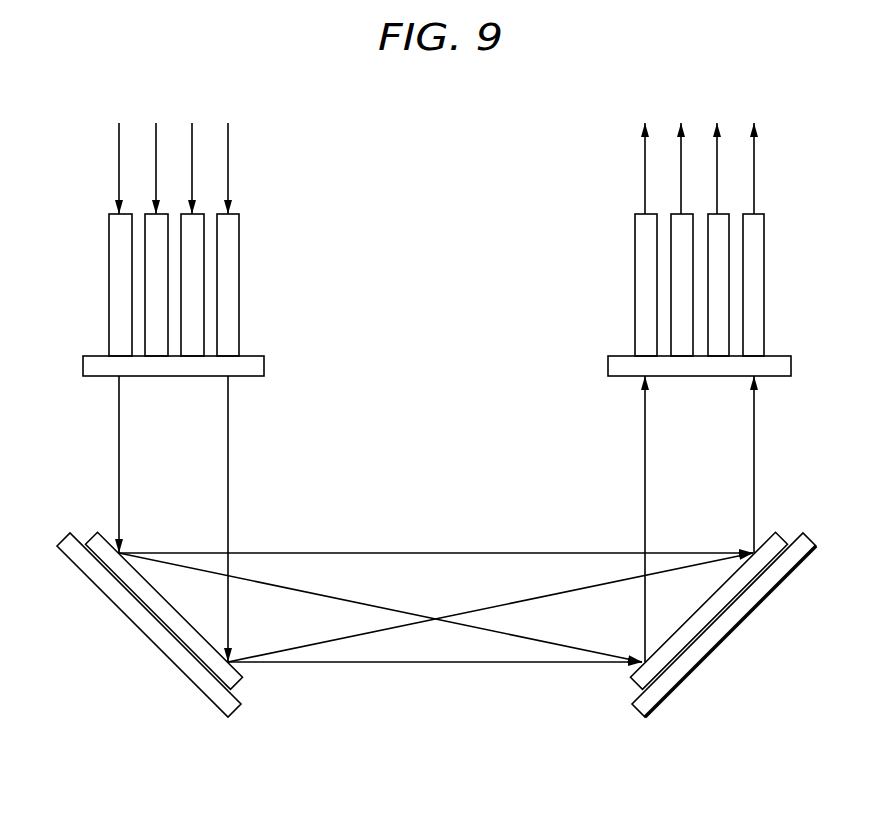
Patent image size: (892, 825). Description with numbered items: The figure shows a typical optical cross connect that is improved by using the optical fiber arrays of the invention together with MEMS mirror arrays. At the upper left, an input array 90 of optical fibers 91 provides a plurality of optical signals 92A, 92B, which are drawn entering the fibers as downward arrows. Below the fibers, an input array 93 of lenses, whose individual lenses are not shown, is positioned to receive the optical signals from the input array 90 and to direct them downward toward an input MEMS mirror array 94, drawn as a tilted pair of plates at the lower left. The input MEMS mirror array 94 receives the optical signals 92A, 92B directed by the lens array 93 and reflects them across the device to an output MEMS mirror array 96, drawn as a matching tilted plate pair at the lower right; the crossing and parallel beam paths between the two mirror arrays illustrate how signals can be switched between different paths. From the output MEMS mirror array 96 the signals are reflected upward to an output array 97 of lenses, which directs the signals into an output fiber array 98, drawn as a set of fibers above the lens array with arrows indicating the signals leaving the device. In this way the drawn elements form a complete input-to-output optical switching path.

The input array of optical fibers 90 is at (278, 212).
The optical fibers 91 is at (108, 285).
The optical signal 92A is at (118, 172).
The optical signal 92B is at (229, 163).
The input array of lenses 93 is at (265, 365).
The input MEMS mirror array 94 is at (242, 680).
The output MEMS mirror array 96 is at (631, 680).
The output array of lenses 97 is at (792, 367).
The output fiber array 98 is at (765, 277).